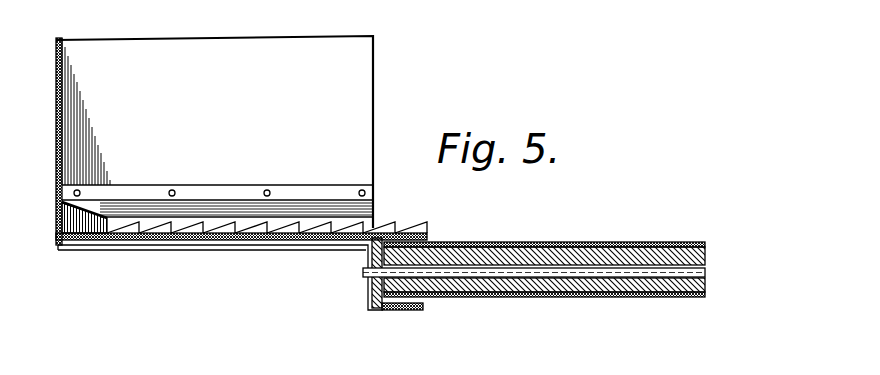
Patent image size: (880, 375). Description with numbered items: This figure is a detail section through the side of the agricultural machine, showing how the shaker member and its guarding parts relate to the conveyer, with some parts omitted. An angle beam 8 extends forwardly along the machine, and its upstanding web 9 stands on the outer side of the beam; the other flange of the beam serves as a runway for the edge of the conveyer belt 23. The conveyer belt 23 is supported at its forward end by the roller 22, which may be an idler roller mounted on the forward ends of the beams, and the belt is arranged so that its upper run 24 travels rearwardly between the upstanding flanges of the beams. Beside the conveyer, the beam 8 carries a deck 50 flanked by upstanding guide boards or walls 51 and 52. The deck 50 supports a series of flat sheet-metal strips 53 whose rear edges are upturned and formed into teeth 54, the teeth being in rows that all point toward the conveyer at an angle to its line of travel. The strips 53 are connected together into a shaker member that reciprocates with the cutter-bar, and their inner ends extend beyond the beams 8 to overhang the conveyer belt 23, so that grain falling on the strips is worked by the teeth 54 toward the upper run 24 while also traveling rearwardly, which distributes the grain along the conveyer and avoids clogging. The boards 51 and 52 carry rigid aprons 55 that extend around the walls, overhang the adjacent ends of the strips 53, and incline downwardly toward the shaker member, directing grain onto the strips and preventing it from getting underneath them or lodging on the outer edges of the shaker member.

The beam 8 is at (415, 312).
The upstanding web 9 is at (375, 295).
The roller 22 is at (630, 252).
The conveyer belt 23 is at (525, 298).
The upper run of conveyer belt 24 is at (560, 242).
The deck 50 is at (235, 242).
The guide board 51 is at (57, 137).
The guide board 52 is at (214, 132).
The flat strip 53 is at (193, 237).
The teeth 54 is at (270, 223).
The apron 55 is at (102, 215).